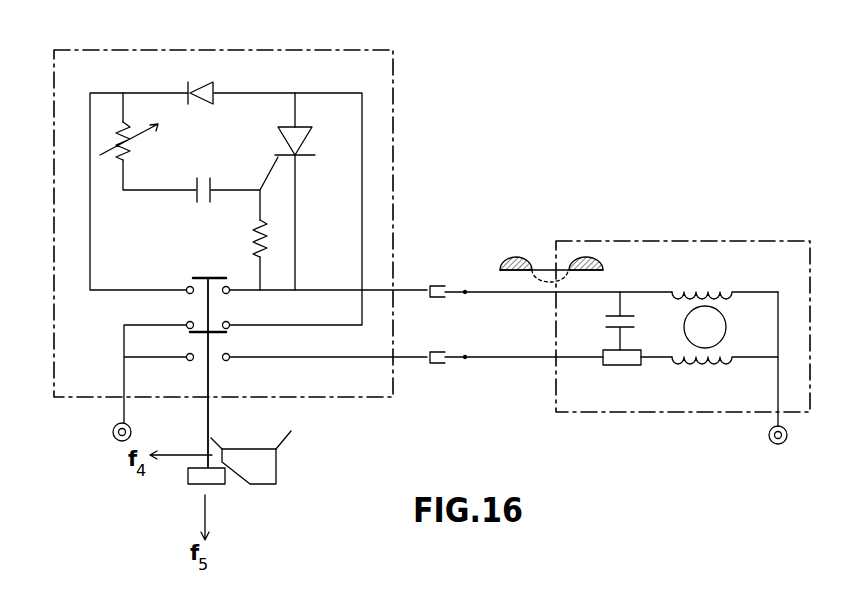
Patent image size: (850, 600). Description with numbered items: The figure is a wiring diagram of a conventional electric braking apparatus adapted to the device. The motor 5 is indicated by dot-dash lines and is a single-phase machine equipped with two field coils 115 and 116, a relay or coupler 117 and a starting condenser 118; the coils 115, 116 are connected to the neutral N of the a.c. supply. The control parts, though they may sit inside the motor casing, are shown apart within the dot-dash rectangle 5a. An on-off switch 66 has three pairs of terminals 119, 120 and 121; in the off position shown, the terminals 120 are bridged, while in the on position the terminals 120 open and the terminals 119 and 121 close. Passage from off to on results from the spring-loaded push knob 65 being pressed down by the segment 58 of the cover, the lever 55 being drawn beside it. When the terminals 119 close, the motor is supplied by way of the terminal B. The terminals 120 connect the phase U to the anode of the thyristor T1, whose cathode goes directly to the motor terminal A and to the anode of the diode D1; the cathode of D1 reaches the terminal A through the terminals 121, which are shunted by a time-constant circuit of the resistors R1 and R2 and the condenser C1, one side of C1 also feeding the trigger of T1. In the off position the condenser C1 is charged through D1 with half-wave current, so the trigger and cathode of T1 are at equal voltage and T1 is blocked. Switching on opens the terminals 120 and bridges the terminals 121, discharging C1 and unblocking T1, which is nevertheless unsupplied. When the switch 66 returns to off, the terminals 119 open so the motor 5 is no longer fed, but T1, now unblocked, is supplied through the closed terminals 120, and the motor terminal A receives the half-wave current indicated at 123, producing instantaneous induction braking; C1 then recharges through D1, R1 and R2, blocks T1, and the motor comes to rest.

The motor 5 is at (710, 241).
The dot-dash rectangle 5a is at (393, 64).
The diode D1 is at (210, 86).
The resistor R1 is at (160, 142).
The condenser C1 is at (199, 176).
The resistor R2 is at (243, 229).
The thyristor T1 is at (295, 102).
The on-off switch 66 is at (208, 424).
The terminals 121 is at (188, 287).
The terminals 120 is at (188, 324).
The terminals 119 is at (188, 361).
The phase U is at (120, 441).
The spring-loaded push knob 65 is at (198, 486).
The segment 58 is at (276, 468).
The lever 55 is at (291, 431).
The motor terminal A is at (444, 270).
The terminal B is at (444, 335).
The half-wave current 123 is at (508, 264).
The starting condenser 118 is at (606, 324).
The relay or coupler 117 is at (608, 368).
The field coil 115 is at (678, 289).
The field coil 116 is at (684, 370).
The neutral N is at (778, 449).